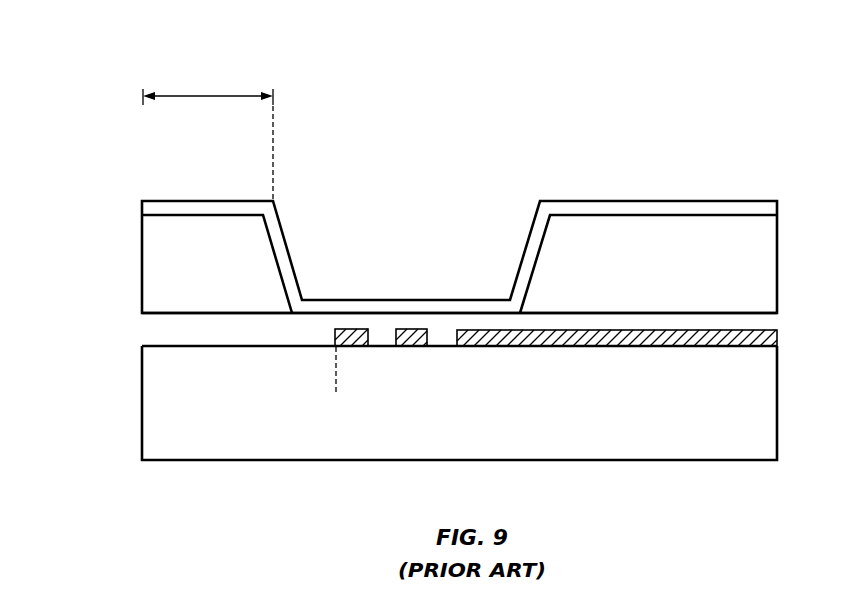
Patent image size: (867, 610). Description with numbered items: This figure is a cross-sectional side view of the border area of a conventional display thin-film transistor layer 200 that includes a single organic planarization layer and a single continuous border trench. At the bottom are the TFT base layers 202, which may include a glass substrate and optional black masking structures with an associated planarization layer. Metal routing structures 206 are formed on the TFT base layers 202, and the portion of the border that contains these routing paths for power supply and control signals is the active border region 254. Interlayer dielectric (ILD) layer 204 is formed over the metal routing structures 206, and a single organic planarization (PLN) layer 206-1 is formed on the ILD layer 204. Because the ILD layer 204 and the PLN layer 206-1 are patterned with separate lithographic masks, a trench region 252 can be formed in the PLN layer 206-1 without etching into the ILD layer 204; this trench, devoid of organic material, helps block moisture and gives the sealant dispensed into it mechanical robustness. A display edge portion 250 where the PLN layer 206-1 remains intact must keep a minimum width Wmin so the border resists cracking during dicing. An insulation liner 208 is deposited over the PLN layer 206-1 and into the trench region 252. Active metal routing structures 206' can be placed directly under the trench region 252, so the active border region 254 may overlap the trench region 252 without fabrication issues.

The thin-film transistor layer 200 is at (88, 70).
The TFT base layers 202 is at (155, 405).
The interlayer dielectric (ILD) layer 204 is at (153, 332).
The metal routing structures 206 is at (617, 363).
The active metal routing structures 206' is at (381, 363).
The organic planarization (PLN) layer 206-1 is at (152, 262).
The insulation liner 208 is at (713, 201).
The display edge portion 250 is at (273, 168).
The trench region 252 is at (533, 168).
The active border region 254 is at (770, 388).